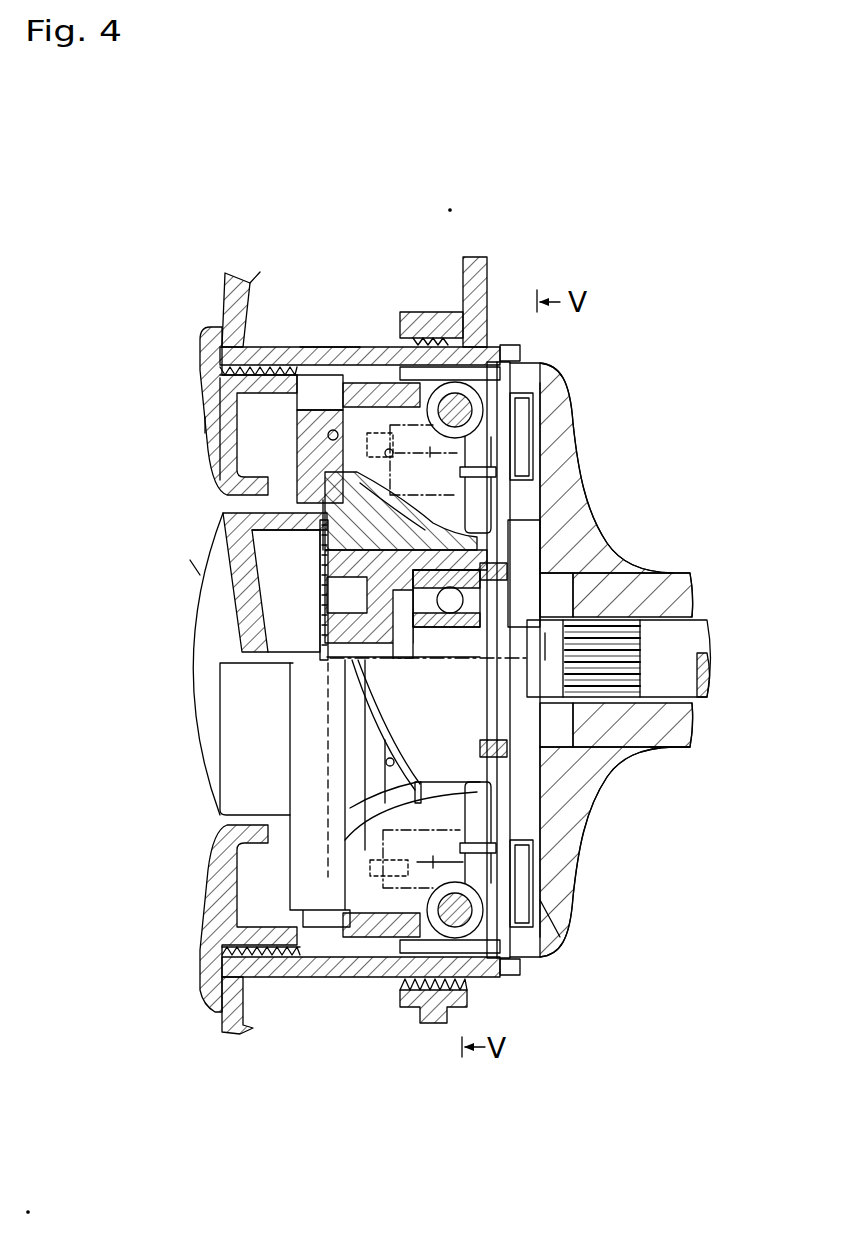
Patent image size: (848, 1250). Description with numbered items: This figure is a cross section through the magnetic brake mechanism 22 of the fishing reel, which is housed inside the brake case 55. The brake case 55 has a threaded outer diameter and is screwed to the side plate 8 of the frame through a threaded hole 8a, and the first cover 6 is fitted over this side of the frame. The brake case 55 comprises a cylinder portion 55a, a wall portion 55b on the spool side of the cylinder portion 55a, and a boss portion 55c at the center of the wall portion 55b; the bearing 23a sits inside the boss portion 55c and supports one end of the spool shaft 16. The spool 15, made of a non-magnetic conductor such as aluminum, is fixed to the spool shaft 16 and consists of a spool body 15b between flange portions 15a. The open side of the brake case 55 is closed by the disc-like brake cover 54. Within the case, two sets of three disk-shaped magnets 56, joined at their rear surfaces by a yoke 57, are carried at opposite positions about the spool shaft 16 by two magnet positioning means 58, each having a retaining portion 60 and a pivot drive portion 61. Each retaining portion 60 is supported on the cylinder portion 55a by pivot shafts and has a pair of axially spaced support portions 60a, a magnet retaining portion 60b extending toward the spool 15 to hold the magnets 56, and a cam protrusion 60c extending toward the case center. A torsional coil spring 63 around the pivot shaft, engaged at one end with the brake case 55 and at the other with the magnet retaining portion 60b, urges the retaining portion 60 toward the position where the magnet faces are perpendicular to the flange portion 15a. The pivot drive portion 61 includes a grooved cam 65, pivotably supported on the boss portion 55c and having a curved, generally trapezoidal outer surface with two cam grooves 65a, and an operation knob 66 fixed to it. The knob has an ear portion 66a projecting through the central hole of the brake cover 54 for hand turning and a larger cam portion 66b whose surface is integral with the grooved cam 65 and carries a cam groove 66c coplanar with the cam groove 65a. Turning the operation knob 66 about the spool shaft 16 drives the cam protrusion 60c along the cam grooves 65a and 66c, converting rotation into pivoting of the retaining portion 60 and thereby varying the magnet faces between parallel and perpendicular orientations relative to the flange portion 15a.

The first cover 6 is at (222, 300).
The side plate 8 is at (480, 278).
The threaded hole 8a is at (397, 343).
The spool 15 is at (662, 722).
The flange portion 15a is at (558, 913).
The spool body 15b is at (683, 749).
The spool shaft 16 is at (693, 677).
The magnetic brake mechanism 22 is at (183, 565).
The bearing 23a is at (590, 556).
The brake cover 54 is at (203, 443).
The brake case 55 is at (277, 345).
The cylinder portion 55a is at (325, 347).
The wall portion 55b is at (548, 510).
The boss portion 55c is at (563, 540).
The magnets 56 is at (540, 403).
The yoke 57 is at (513, 403).
The magnet positioning means 58 is at (488, 368).
The retaining portion 60 is at (400, 417).
The support portions 60a is at (493, 417).
The magnet retaining portion 60b is at (480, 440).
The cam protrusion 60c is at (560, 498).
The pivot drive portion 61 is at (320, 500).
The torsional coil spring 63 is at (427, 385).
The grooved cam 65 is at (303, 738).
The cam groove 65a is at (400, 760).
The operation knob 66 is at (240, 627).
The ear portion 66a is at (208, 688).
The cam portion 66b is at (205, 425).
The cam groove 66c is at (297, 458).